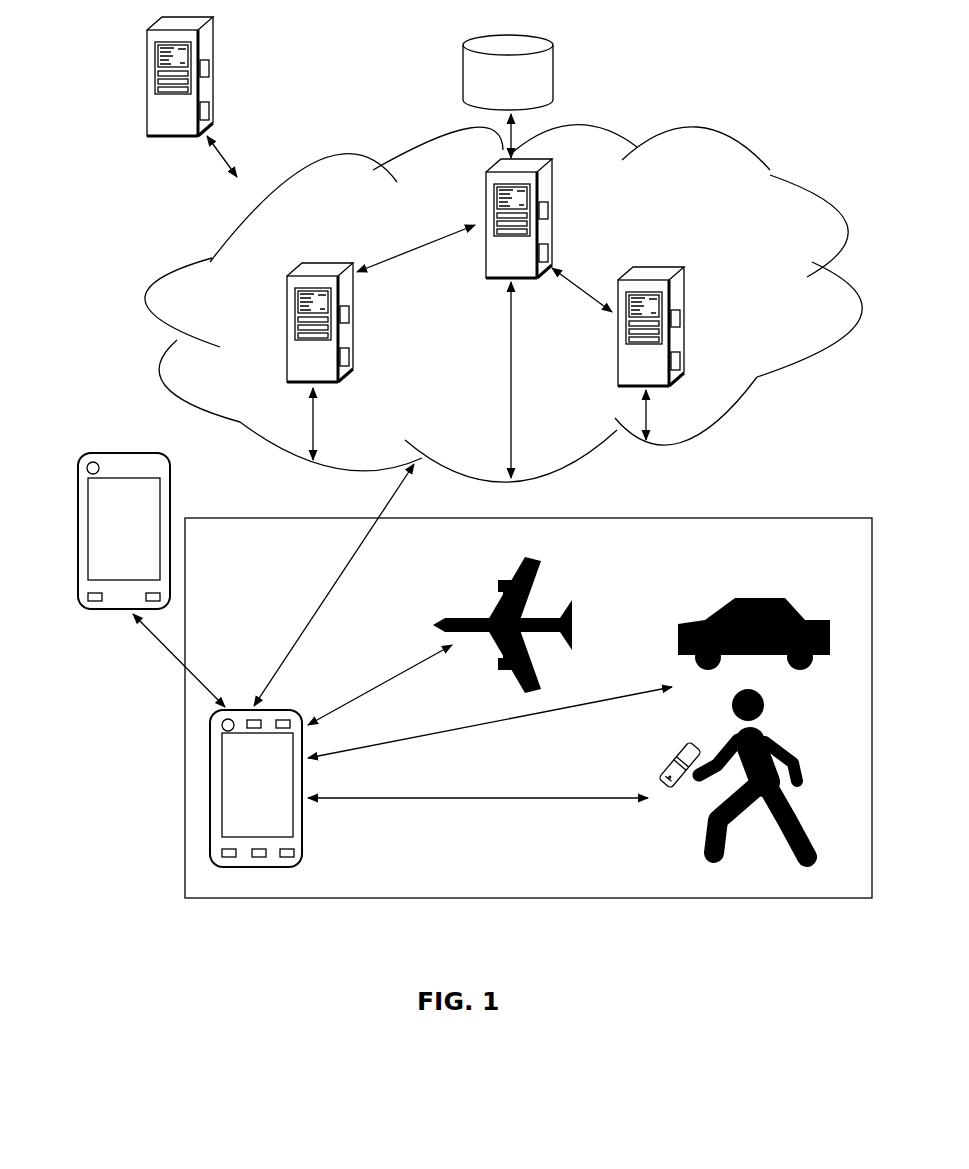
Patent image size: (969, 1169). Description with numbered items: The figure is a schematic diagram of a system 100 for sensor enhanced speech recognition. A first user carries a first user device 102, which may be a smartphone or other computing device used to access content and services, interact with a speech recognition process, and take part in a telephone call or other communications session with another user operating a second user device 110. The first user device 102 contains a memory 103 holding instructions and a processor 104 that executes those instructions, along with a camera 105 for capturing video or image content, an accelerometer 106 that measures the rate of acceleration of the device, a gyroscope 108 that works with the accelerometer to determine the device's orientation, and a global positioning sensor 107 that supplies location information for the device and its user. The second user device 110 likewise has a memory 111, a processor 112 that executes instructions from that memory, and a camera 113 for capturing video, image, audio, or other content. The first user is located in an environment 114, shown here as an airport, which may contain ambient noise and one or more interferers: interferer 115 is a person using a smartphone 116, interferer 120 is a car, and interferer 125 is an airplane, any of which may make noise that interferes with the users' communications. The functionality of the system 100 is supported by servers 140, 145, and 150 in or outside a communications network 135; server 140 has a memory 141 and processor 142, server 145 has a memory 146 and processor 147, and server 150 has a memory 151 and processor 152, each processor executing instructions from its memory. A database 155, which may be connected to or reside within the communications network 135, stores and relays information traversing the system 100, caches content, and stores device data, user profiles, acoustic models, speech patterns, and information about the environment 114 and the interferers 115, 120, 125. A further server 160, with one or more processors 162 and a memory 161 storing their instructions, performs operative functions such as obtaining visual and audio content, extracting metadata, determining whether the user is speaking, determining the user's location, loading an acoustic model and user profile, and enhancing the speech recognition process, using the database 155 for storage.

The system 100 is at (509, 906).
The first user device 102 is at (273, 815).
The memory 103 is at (228, 860).
The processor 104 is at (285, 860).
The camera 105 is at (222, 725).
The accelerometer 106 is at (258, 860).
The global positioning sensor 107 is at (288, 718).
The gyroscope 108 is at (247, 718).
The second user device 110 is at (145, 544).
The memory 111 is at (93, 602).
The processor 112 is at (162, 596).
The camera 113 is at (87, 468).
The environment 114 is at (635, 898).
The interferer 115 is at (803, 858).
The smartphone 116 is at (672, 783).
The interferer 120 is at (822, 620).
The interferer 125 is at (568, 600).
The communications network 135 is at (221, 340).
The server 140 is at (520, 218).
The memory 141 is at (548, 212).
The processor 142 is at (548, 250).
The server 145 is at (320, 322).
The memory 146 is at (349, 316).
The processor 147 is at (349, 356).
The server 150 is at (705, 326).
The memory 151 is at (680, 320).
The processor 152 is at (680, 360).
The database 155 is at (508, 72).
The server 160 is at (183, 76).
The memory 161 is at (209, 109).
The processors 162 is at (209, 68).